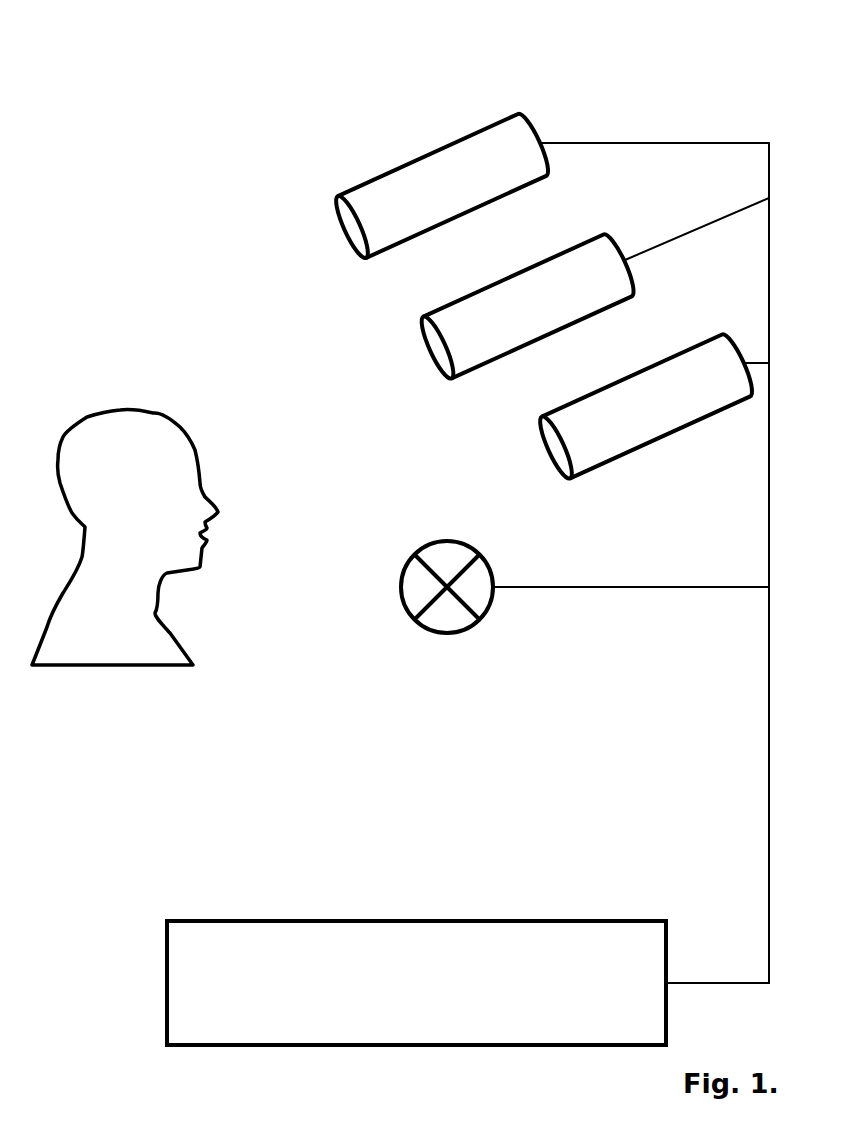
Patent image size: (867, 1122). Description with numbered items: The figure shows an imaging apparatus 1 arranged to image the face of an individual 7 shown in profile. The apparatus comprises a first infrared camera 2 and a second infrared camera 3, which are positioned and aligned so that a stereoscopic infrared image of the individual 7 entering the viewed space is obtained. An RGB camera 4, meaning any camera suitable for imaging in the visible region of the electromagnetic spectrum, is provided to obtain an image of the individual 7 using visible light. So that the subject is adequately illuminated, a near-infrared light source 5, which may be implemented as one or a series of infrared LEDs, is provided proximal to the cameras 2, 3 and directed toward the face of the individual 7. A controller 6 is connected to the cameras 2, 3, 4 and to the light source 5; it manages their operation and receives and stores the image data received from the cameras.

The imaging apparatus 1 is at (152, 102).
The first infrared camera 2 is at (355, 188).
The second infrared camera 3 is at (627, 455).
The RGB camera 4 is at (478, 289).
The infrared light source 5 is at (492, 568).
The controller 6 is at (347, 920).
The individual 7 is at (83, 418).